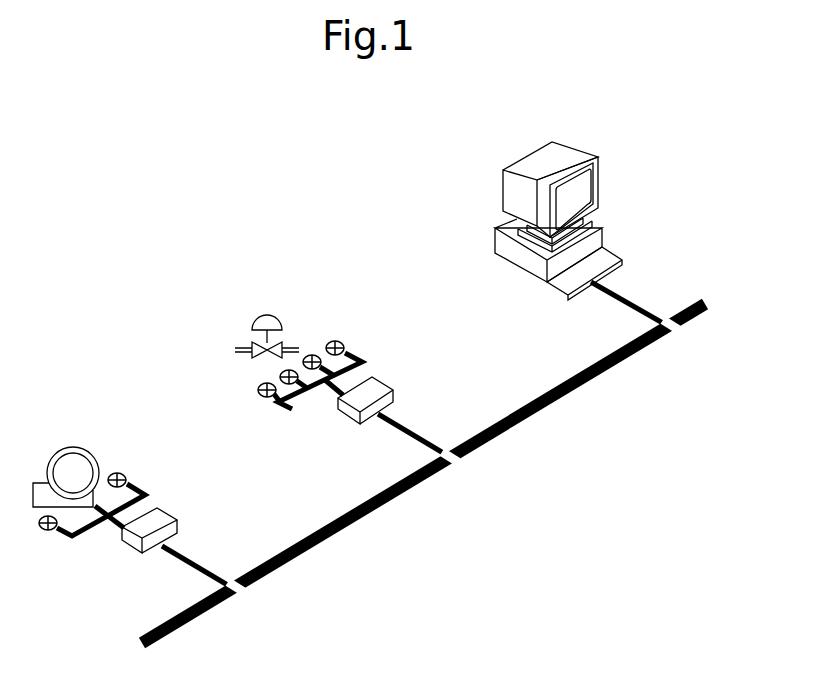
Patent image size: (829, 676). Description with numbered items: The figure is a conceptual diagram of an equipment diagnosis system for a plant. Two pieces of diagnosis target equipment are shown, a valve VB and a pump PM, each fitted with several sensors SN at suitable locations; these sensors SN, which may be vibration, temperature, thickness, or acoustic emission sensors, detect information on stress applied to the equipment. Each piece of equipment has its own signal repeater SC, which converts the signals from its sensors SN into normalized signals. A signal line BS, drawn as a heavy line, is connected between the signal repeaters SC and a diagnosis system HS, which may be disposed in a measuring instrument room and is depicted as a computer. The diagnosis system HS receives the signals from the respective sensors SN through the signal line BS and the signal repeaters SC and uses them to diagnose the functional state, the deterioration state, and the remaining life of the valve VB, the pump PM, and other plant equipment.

The diagnosis system HS is at (504, 163).
The signal line BS is at (536, 412).
The signal repeater SC is at (384, 380).
The sensor SN is at (338, 343).
The valve VB is at (278, 320).
The pump PM is at (88, 446).